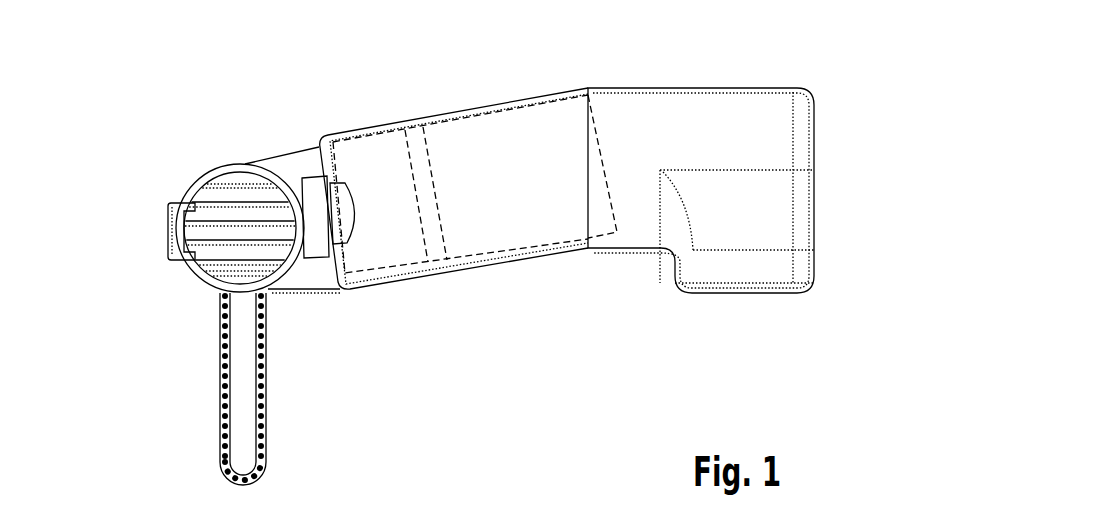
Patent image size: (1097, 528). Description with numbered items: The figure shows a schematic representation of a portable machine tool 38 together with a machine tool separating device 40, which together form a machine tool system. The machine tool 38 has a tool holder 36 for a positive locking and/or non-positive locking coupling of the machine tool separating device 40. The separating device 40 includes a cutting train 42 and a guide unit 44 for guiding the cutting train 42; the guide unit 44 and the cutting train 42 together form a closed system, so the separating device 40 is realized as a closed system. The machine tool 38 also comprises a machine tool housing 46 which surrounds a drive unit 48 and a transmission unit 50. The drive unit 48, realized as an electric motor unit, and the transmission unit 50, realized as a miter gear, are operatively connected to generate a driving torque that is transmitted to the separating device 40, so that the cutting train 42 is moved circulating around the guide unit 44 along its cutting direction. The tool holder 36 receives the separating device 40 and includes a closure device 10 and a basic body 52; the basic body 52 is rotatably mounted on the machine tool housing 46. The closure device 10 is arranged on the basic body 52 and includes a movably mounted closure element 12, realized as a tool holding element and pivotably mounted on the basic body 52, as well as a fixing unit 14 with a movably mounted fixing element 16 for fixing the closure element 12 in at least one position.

The closure device 10 is at (143, 290).
The closure element 12 is at (205, 212).
The fixing unit 14 is at (128, 208).
The fixing element 16 is at (168, 207).
The tool holder 36 is at (262, 118).
The machine tool 38 is at (705, 66).
The machine tool separating device 40 is at (215, 389).
The cutting train 42 is at (268, 342).
The guide unit 44 is at (250, 387).
The machine tool housing 46 is at (512, 238).
The drive unit 48 is at (455, 122).
The transmission unit 50 is at (373, 127).
The basic body 52 is at (238, 170).